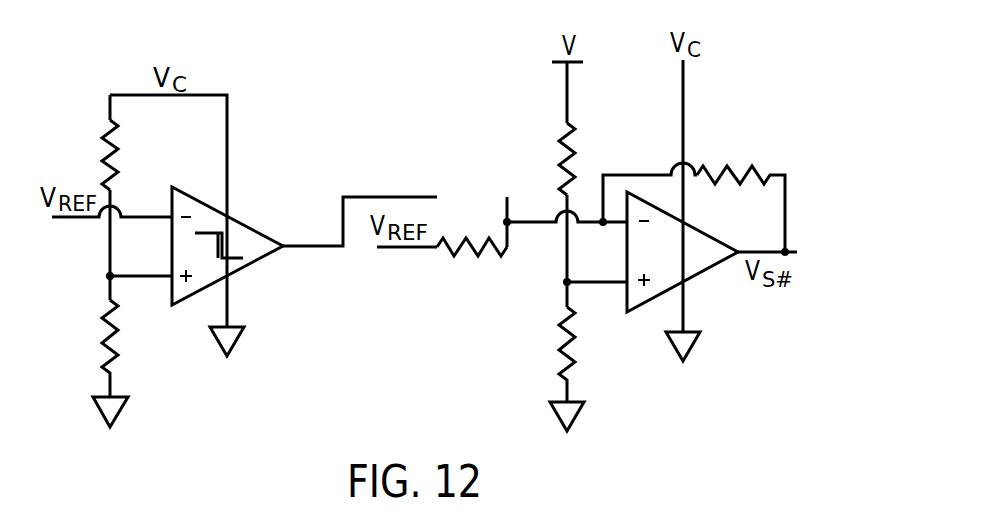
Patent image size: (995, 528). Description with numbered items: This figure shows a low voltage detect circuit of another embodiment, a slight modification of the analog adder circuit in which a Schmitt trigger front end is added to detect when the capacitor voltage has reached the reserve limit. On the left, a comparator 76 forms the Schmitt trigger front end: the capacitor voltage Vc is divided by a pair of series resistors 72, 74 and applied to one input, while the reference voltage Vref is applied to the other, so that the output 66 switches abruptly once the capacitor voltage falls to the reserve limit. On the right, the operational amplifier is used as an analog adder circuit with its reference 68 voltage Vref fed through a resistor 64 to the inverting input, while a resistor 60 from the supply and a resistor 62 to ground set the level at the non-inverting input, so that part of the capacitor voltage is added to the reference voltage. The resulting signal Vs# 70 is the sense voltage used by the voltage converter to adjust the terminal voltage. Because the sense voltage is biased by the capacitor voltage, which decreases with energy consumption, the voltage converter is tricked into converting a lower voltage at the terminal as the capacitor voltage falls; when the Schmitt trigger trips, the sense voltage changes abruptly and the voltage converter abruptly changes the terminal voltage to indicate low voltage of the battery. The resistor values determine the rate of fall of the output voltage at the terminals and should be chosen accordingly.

The resistor 60 is at (560, 150).
The resistor 62 is at (562, 336).
The resistor 64 is at (460, 257).
The comparator output signal 66 is at (460, 196).
The reference voltage 68 is at (712, 232).
The sense voltage Vs# 70 is at (795, 250).
The resistor 72 is at (102, 176).
The resistor 74 is at (102, 328).
The comparator 76 is at (258, 228).